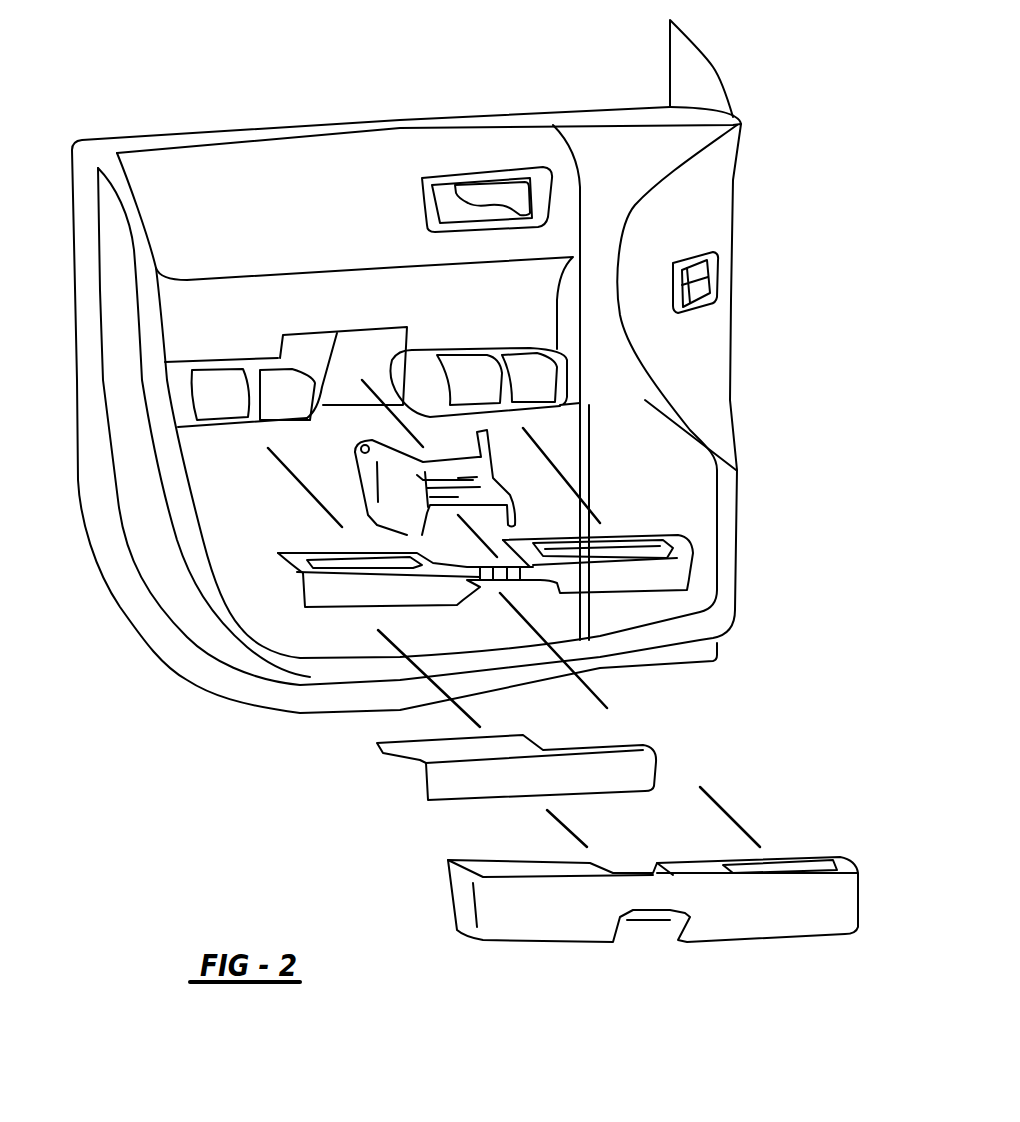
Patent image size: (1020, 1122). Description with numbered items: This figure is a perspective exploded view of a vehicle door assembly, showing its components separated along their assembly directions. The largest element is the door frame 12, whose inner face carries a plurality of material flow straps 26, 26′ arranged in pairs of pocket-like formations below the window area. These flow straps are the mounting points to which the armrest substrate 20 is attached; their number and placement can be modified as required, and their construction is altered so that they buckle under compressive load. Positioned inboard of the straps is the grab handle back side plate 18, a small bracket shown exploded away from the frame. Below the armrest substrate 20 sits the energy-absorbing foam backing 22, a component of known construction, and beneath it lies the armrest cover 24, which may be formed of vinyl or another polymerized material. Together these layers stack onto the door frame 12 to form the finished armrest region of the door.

The door frame 12 is at (148, 507).
The grab handle back side plate 18 is at (457, 477).
The armrest substrate 20 is at (670, 573).
The energy-absorbing foam backing 22 is at (443, 787).
The armrest cover 24 is at (777, 912).
The material flow strap 26 is at (256, 373).
The material flow strap 26′ is at (320, 373).